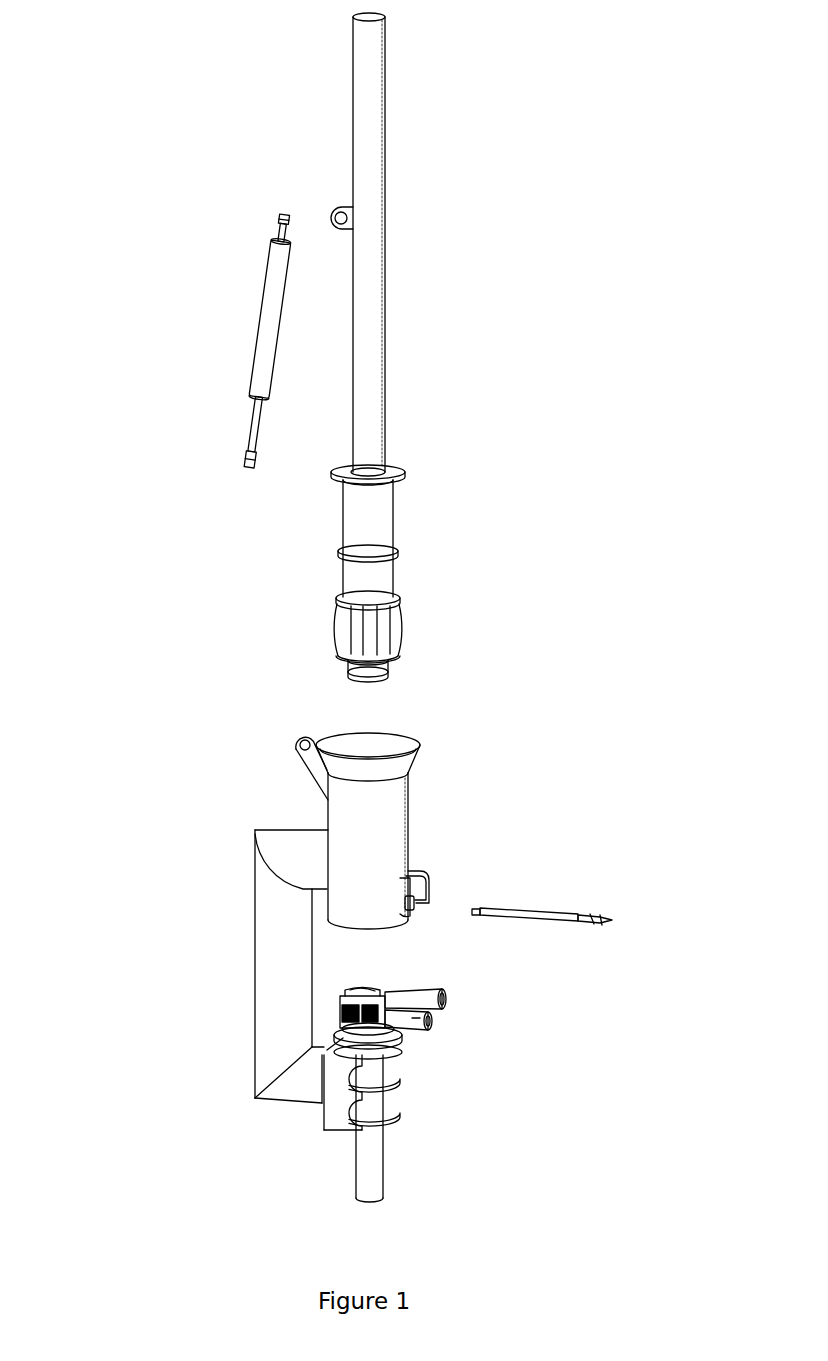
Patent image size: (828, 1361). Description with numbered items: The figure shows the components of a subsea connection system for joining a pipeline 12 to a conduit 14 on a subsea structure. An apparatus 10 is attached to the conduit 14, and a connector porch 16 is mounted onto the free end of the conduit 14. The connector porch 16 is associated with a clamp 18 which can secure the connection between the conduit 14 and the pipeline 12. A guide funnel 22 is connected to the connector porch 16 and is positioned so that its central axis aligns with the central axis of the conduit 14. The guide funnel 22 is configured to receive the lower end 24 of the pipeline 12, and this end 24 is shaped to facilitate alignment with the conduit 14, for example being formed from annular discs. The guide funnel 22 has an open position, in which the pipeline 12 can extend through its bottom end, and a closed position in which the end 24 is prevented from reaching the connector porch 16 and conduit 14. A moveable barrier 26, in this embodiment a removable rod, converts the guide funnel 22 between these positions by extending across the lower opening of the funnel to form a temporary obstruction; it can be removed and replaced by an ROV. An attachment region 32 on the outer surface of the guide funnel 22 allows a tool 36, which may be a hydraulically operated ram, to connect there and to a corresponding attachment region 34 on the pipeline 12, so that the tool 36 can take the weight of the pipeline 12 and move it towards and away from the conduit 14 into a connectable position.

The apparatus 10 is at (205, 945).
The pipeline 12 is at (384, 148).
The conduit 14 is at (358, 1158).
The connector porch 16 is at (435, 1025).
The clamp 18 is at (380, 987).
The guide funnel 22 is at (415, 790).
The lower end of the pipeline 24 is at (405, 555).
The moveable barrier 26 is at (538, 909).
The attachment region 32 is at (288, 737).
The corresponding attachment region 34 is at (335, 212).
The tool 36 is at (262, 332).